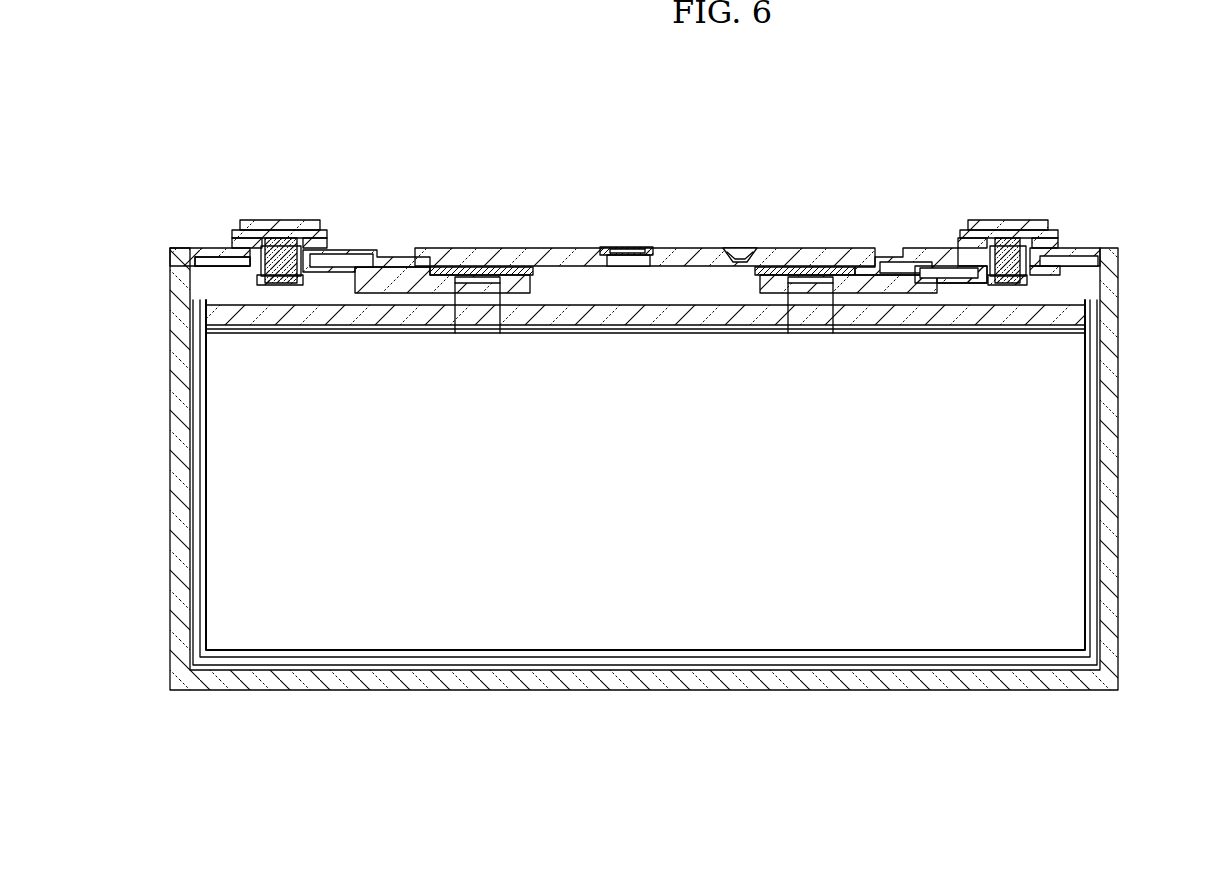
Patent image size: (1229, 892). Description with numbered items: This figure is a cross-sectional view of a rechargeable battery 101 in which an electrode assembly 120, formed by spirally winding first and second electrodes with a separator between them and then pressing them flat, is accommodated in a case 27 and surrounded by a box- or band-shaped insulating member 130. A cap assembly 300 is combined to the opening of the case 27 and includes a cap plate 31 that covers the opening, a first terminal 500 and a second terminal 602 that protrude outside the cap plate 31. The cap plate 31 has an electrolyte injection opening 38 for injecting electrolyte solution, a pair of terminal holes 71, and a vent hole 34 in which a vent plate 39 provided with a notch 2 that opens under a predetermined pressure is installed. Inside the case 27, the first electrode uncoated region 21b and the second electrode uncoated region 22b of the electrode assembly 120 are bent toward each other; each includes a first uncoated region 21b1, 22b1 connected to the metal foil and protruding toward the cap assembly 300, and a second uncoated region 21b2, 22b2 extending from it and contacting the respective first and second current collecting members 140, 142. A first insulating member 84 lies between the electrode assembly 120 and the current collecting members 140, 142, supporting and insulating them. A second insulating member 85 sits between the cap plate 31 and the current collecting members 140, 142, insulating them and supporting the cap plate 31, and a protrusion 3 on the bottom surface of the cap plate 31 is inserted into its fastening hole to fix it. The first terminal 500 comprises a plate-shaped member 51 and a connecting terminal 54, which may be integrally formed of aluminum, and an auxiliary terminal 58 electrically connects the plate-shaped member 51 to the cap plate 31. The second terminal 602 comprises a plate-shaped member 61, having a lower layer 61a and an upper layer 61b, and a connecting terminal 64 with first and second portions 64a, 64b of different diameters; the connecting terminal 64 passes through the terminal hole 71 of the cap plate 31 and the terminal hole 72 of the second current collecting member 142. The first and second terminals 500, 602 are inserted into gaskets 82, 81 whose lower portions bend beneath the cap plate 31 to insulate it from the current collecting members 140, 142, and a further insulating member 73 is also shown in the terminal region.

The rechargeable battery 101 is at (566, 73).
The case 27 is at (1108, 433).
The insulating member 130 is at (1093, 553).
The electrode assembly 120 is at (643, 610).
The first insulating member 84 is at (683, 313).
The cap plate 31 is at (531, 248).
The notch 2 is at (618, 246).
The vent plate 39 is at (648, 247).
The electrolyte injection opening 38 is at (738, 247).
The cap assembly 300 is at (690, 226).
The insulating member 73 is at (347, 250).
The gasket 81 is at (327, 224).
The second current collecting member 142 is at (395, 292).
The second insulating member 85 is at (478, 268).
The protrusion 3 is at (402, 250).
The first current collecting member 140 is at (898, 292).
The auxiliary terminal 58 is at (962, 238).
The second electrode uncoated region 22b is at (498, 366).
The first uncoated region 22b1 is at (461, 330).
The second uncoated region 22b2 is at (484, 300).
The first electrode uncoated region 21b is at (784, 361).
The first uncoated region 21b1 is at (816, 341).
The second uncoated region 21b2 is at (805, 283).
The vent hole 34 is at (625, 268).
The second terminal 602 is at (230, 186).
The plate-shaped member 61 is at (279, 197).
The lower layer 61a is at (277, 220).
The upper layer 61b is at (238, 144).
The connecting terminal 64 is at (202, 205).
The first portion 64a is at (240, 252).
The second portion 64b is at (272, 285).
The terminal hole 72 is at (280, 285).
The terminal hole 71 is at (298, 281).
The first terminal 500 is at (1008, 203).
The plate-shaped member 51 is at (978, 220).
The connecting terminal 54 is at (973, 156).
The gasket 82 is at (1057, 270).